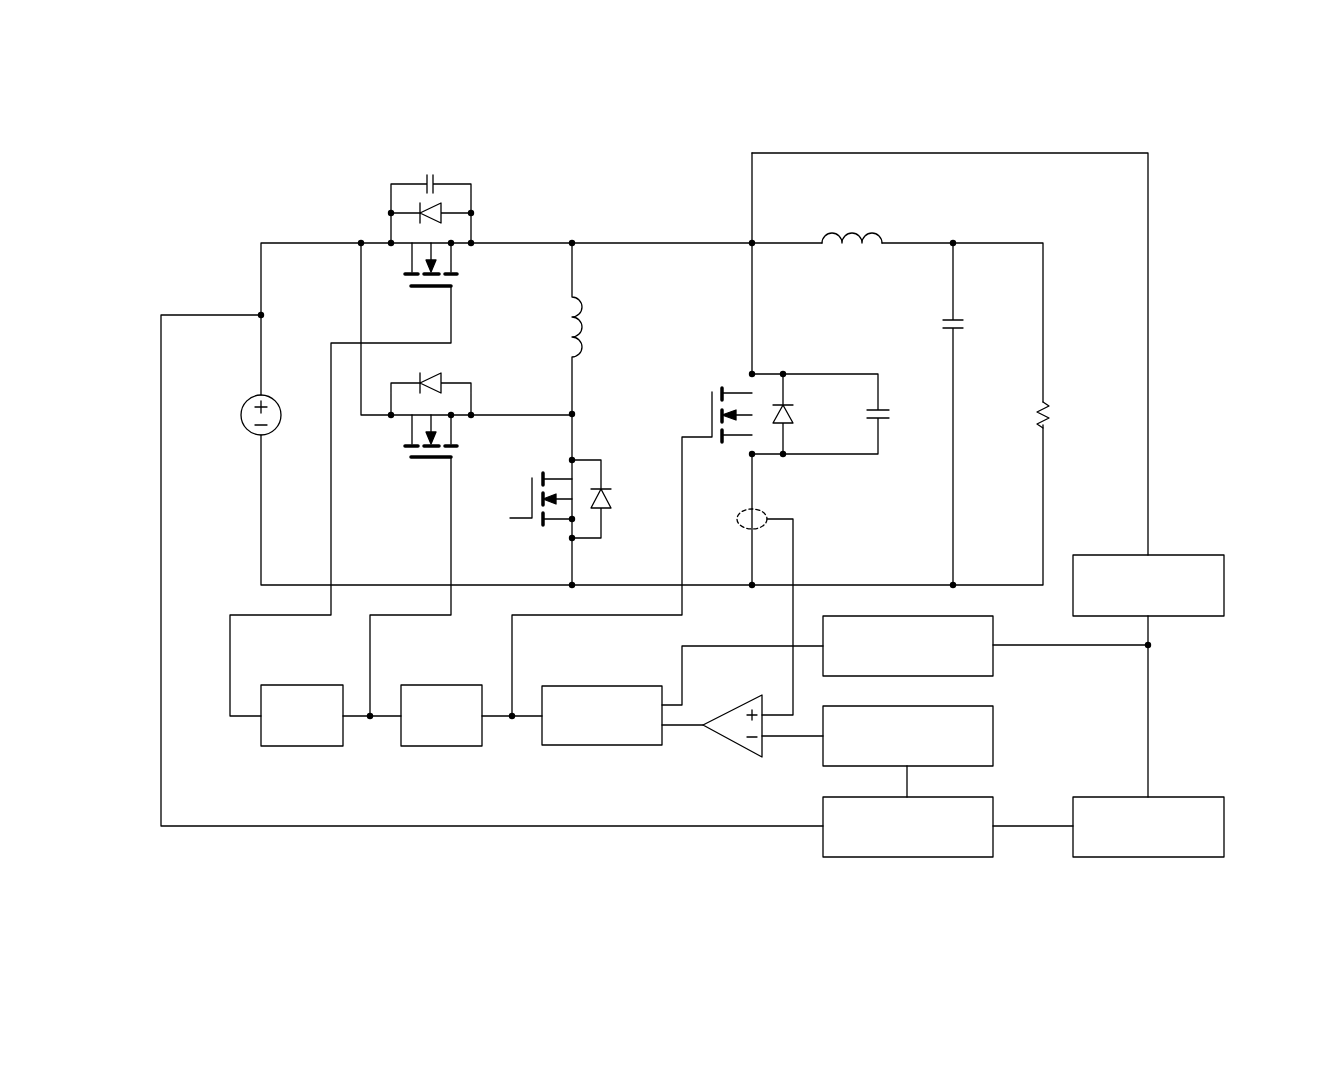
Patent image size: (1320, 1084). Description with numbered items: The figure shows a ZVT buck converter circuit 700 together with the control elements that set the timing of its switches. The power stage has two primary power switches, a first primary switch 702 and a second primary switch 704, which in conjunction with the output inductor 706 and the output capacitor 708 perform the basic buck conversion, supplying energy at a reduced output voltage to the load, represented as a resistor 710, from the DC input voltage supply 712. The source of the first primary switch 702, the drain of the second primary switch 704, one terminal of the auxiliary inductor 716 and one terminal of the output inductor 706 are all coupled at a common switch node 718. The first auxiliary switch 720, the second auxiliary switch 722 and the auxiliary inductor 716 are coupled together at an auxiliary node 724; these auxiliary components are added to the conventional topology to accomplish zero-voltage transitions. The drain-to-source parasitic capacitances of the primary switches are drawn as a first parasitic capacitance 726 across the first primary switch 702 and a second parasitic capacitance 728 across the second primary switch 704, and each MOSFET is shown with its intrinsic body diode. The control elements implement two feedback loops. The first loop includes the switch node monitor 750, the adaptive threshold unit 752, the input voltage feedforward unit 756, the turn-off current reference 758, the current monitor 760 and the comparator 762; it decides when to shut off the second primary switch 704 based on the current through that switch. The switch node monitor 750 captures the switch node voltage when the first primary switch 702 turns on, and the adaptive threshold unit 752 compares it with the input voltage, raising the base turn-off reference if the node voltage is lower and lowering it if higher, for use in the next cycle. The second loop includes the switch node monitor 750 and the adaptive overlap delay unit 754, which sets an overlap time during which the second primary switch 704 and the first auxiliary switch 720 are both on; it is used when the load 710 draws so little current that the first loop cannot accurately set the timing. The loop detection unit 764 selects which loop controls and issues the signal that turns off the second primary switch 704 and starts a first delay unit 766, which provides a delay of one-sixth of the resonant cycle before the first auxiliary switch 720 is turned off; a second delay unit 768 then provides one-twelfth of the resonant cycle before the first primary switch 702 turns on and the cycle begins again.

The ZVT buck converter circuit 700 is at (215, 153).
The primary power switch S1 702 is at (418, 296).
The primary power switch S2 704 is at (712, 404).
The output inductor Lo 706 is at (882, 238).
The output capacitor Co 708 is at (943, 324).
The load resistor Ro 710 is at (1038, 413).
The DC input voltage supply Vin 712 is at (241, 414).
The auxiliary inductor La 716 is at (580, 305).
The switch node 718 is at (571, 247).
The first auxiliary switch Sa1 720 is at (418, 466).
The second auxiliary switch Sa2 722 is at (531, 492).
The auxiliary node 724 is at (571, 413).
The drain-to-source parasitic capacitance Cds1 726 is at (430, 176).
The drain-to-source parasitic capacitance Cds2 728 is at (867, 414).
The switch node monitor 750 is at (1224, 585).
The adaptive threshold unit 752 is at (1160, 858).
The adaptive overlap delay unit 754 is at (993, 660).
The Vin feedforward unit 756 is at (918, 858).
The Is2-off reference 758 is at (993, 750).
The current monitor 760 is at (765, 508).
The comparator 762 is at (733, 746).
The loop detection unit 764 is at (603, 748).
The delay unit 766 is at (443, 748).
The delay unit 768 is at (303, 748).